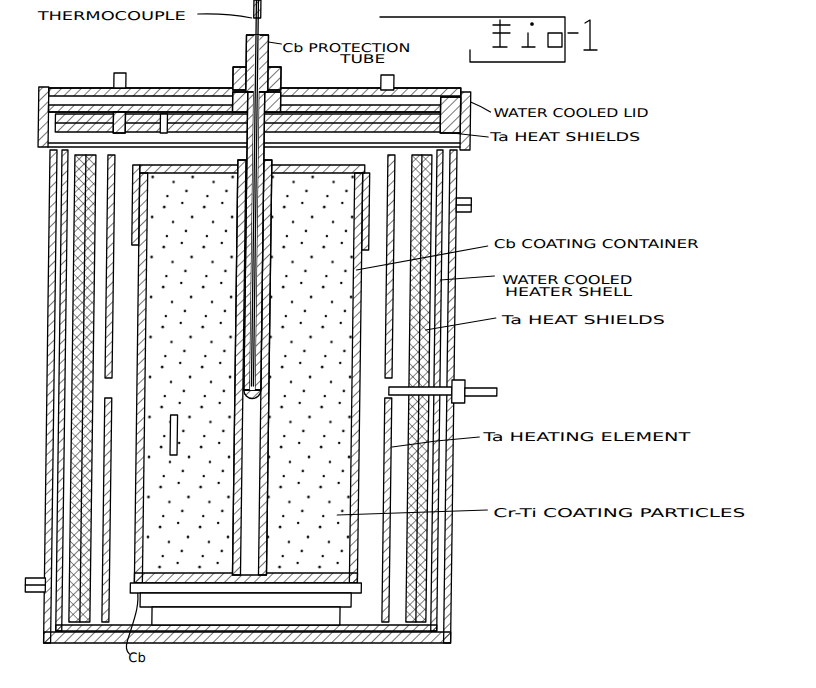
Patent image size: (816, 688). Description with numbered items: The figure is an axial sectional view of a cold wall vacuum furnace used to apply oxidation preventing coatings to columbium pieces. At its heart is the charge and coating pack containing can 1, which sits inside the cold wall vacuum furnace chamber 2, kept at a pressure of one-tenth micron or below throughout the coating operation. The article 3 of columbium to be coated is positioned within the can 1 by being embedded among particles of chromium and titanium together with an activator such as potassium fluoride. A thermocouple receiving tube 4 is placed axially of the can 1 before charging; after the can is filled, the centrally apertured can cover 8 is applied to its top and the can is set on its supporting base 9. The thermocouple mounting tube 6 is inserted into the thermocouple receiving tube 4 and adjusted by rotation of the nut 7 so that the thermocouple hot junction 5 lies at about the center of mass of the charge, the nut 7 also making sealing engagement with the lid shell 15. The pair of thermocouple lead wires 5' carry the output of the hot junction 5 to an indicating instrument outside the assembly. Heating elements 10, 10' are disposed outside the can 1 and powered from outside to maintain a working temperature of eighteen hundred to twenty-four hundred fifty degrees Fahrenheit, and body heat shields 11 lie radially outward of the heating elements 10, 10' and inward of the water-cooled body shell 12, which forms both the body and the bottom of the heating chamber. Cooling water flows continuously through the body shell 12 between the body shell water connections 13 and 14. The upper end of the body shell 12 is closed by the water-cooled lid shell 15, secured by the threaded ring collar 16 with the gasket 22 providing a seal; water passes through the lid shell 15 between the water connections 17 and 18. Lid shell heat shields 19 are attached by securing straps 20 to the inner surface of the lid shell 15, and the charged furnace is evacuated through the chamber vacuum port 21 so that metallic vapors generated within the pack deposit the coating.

The can 1 is at (360, 560).
The cold wall vacuum furnace chamber 2 is at (281, 396).
The article 3 is at (181, 445).
The thermocouple receiving tube 4 is at (273, 440).
The thermocouple hot junction 5 is at (269, 217).
The thermocouple lead wires 5' is at (271, 193).
The thermocouple mounting tube 6 is at (268, 58).
The nut 7 is at (282, 76).
The can cover 8 is at (364, 175).
The supporting base 9 is at (354, 598).
The heating element 10 is at (250, 266).
The heating element 10' is at (247, 510).
The body heat shields 11 is at (62, 501).
The water-cooled body shell 12 is at (454, 569).
The body shell water connection 13 is at (41, 578).
The body shell water connection 14 is at (472, 200).
The lid shell 15 is at (138, 88).
The ring collar 16 is at (40, 106).
The water connection 17 is at (115, 80).
The water connection 18 is at (395, 83).
The lid shell heat shields 19 is at (113, 123).
The securing straps 20 is at (162, 128).
The chamber vacuum port 21 is at (473, 402).
The gasket 22 is at (448, 112).